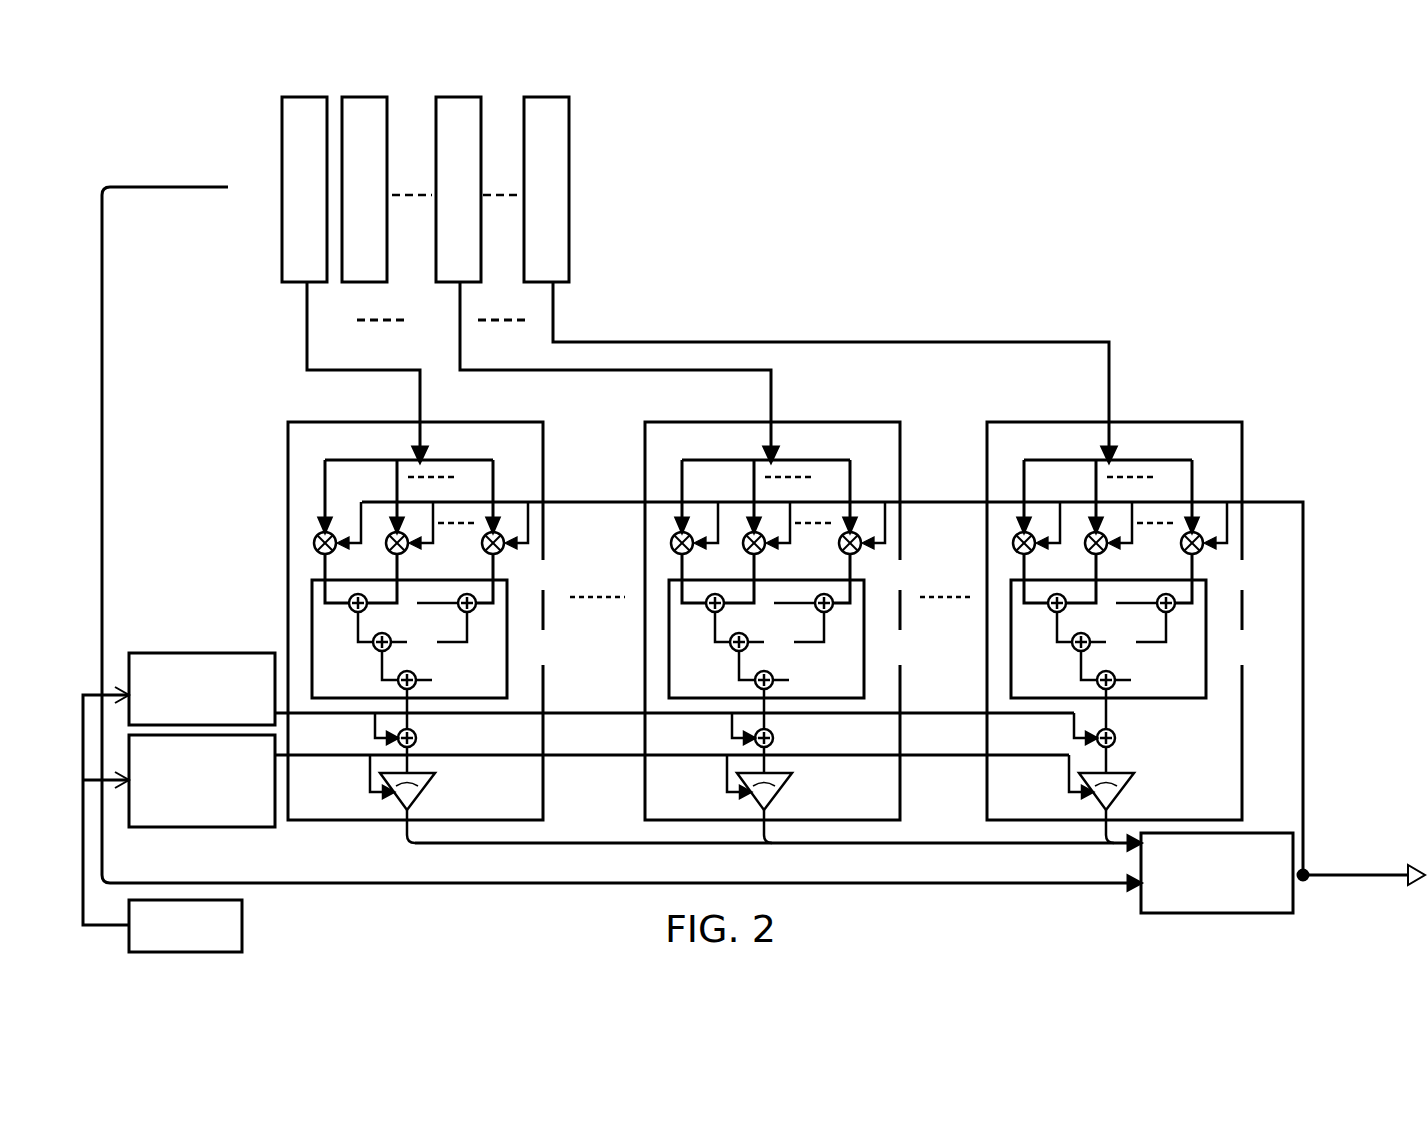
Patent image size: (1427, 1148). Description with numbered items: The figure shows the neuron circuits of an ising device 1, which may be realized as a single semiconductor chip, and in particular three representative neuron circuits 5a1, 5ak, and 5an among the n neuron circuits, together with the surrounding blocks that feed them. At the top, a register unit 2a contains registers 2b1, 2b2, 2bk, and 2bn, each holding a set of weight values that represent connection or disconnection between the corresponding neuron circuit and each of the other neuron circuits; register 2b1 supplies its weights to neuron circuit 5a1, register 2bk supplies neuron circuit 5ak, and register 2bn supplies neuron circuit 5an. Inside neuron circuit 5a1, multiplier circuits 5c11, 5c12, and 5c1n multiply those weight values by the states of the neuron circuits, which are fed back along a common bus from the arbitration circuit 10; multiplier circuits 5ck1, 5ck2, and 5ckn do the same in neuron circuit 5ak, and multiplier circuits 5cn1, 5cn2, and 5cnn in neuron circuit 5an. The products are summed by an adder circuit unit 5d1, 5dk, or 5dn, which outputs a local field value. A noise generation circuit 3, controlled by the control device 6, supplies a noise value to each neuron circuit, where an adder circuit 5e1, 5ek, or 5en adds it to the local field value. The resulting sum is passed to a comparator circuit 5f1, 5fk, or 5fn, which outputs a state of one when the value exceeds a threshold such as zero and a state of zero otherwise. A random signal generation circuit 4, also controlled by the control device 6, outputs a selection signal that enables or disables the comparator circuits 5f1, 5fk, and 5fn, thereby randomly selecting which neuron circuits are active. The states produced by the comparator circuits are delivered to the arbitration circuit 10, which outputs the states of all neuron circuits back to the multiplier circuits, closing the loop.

The ising device 1 is at (1384, 117).
The register unit 2a is at (260, 278).
The register 2b1 is at (308, 96).
The register 2b2 is at (369, 96).
The register 2bk is at (459, 96).
The register 2bn is at (547, 96).
The noise generation circuit 3 is at (217, 653).
The random signal generation circuit 4 is at (272, 830).
The neuron circuit 5a1 is at (288, 422).
The neuron circuit 5ak is at (753, 616).
The neuron circuit 5an is at (1096, 616).
The multiplier circuit 5c11 is at (334, 553).
The multiplier circuit 5c12 is at (406, 553).
The multiplier circuit 5c1n is at (502, 553).
The multiplier circuit 5ck1 is at (705, 542).
The multiplier circuit 5ck2 is at (779, 542).
The multiplier circuit 5ckn is at (879, 545).
The multiplier circuit 5cn1 is at (1048, 542).
The multiplier circuit 5cn2 is at (1122, 542).
The multiplier circuit 5cnn is at (1222, 545).
The adder circuit unit 5d1 is at (507, 626).
The adder circuit unit 5dk is at (789, 654).
The adder circuit unit 5dn is at (1131, 654).
The adder circuit 5e1 is at (417, 740).
The adder circuit 5ek is at (785, 743).
The adder circuit 5en is at (1128, 743).
The comparator circuit 5f1 is at (437, 775).
The comparator circuit 5fk is at (792, 799).
The comparator circuit 5fn is at (1134, 799).
The control device 6 is at (245, 921).
The arbitration circuit 10 is at (1244, 833).